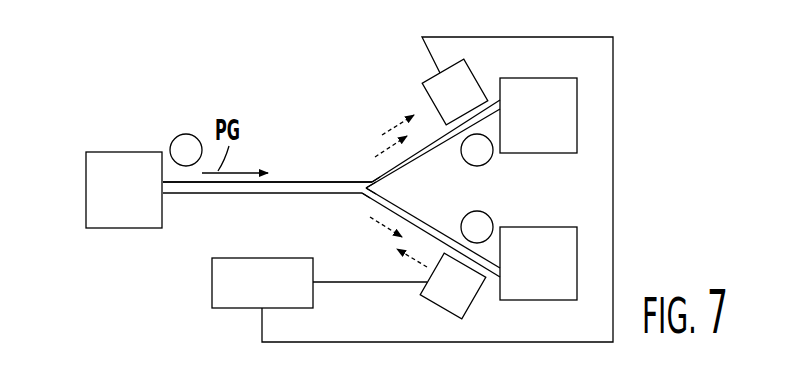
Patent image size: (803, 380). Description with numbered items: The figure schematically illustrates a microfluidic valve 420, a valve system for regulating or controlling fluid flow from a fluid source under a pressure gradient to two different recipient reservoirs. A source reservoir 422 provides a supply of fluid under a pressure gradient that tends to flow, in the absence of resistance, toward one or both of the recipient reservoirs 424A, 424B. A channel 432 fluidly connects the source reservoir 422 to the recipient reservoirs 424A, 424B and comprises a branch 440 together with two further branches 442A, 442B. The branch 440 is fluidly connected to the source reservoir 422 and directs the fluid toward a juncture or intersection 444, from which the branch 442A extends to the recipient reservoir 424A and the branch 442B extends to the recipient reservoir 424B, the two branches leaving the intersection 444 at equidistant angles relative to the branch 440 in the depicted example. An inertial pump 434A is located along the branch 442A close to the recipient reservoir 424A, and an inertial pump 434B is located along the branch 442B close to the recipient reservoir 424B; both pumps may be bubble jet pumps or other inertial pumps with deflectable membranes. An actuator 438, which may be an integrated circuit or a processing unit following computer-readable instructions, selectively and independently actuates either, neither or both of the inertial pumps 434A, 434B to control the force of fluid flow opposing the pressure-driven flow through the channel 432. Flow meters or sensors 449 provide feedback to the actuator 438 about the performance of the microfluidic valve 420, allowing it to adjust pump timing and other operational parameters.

The microfluidic valve 420 is at (257, 105).
The source reservoir 422 is at (86, 190).
The recipient reservoir 424A is at (510, 78).
The recipient reservoir 424B is at (513, 300).
The channel 432 is at (285, 178).
The inertial pump 434A is at (422, 93).
The inertial pump 434B is at (440, 306).
The actuator 438 is at (212, 298).
The branch 440 is at (212, 194).
The branch 442A is at (371, 178).
The branch 442B is at (427, 219).
The intersection 444 is at (361, 194).
The flow meters or sensors 449 is at (181, 135).